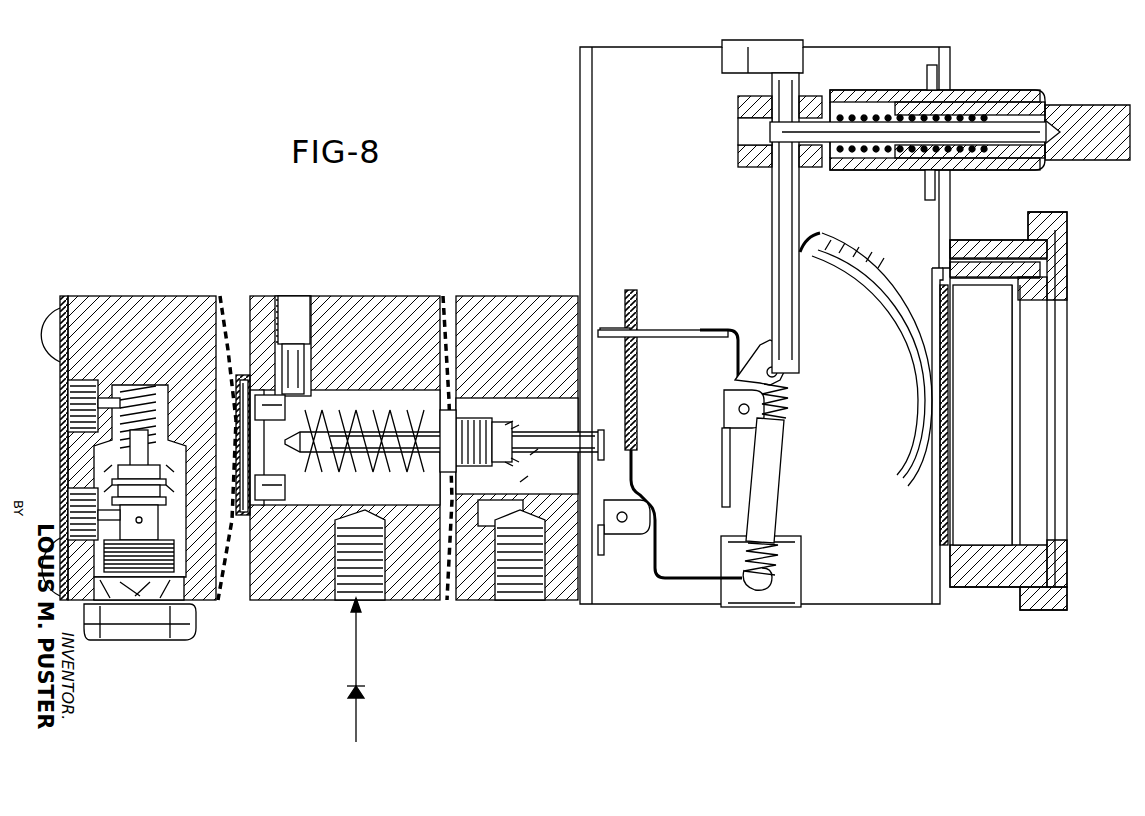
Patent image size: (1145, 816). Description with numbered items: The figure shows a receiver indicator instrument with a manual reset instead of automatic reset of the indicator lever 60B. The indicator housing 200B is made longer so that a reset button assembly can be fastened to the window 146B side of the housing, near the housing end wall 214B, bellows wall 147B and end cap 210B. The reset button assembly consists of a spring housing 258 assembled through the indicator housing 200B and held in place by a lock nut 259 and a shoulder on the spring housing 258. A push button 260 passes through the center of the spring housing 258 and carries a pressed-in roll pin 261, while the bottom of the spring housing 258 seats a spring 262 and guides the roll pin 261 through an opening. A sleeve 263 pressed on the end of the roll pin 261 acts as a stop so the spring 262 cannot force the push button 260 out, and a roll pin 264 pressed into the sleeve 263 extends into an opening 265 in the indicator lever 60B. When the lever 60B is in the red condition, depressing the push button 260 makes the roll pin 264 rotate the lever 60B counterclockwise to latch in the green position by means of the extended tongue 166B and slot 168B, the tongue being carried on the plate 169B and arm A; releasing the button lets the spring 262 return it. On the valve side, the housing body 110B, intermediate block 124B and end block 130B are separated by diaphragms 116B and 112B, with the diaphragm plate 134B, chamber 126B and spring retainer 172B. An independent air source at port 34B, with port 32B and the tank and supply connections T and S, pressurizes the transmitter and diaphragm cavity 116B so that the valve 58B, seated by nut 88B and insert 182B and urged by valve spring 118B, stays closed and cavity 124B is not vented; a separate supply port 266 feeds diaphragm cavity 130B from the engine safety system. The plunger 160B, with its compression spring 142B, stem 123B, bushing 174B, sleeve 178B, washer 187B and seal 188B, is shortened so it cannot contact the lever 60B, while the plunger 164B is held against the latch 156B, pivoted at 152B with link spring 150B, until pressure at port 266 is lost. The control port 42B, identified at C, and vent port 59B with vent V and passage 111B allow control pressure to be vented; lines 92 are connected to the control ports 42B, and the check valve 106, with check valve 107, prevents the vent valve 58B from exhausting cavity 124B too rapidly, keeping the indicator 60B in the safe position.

The housing body 110B is at (100, 312).
The diaphragm cavity 116B is at (210, 340).
The vent passage 111B is at (250, 290).
The vent V is at (280, 305).
The vent port 59B is at (305, 300).
The diaphragm 112B is at (475, 312).
The diaphragm cavity 124B is at (395, 355).
The stem 123B is at (294, 360).
The compression spring 142B is at (356, 426).
The valve spring 118B is at (130, 392).
The tank port T is at (68, 392).
The tank port fitting 32B is at (72, 410).
The check valve 106 is at (130, 468).
The port 34B is at (72, 500).
The supply port S is at (70, 520).
The valve 58B is at (176, 550).
The diaphragm plate 134B is at (280, 530).
The chamber 126B is at (228, 576).
The spring retainer 172B is at (318, 498).
The nut 88B is at (140, 580).
The valve seat insert 182B is at (152, 612).
The control port C is at (342, 600).
The control port 42B is at (356, 600).
The diaphragm cavity 130B is at (476, 532).
The supply port 266 is at (524, 600).
The seal 188B is at (526, 486).
The bushing 174B is at (482, 380).
The sleeve 178B is at (488, 400).
The washer 187B is at (478, 418).
The plunger 164B is at (498, 422).
The plunger 160B is at (605, 442).
The slot 168B is at (632, 360).
The plate 169B is at (626, 312).
The extended tongue 166B is at (658, 328).
The pivot arm A is at (710, 334).
The latch 156B is at (652, 555).
The link spring 150B is at (783, 465).
The pivot 152B is at (785, 365).
The indicator housing 200B is at (875, 538).
The indicator lever 60B is at (890, 322).
The opening 265 is at (798, 255).
The roll pin 264 is at (770, 196).
The sleeve 263 is at (738, 120).
The lock nut 259 is at (937, 75).
The spring 262 is at (1000, 100).
The push button 260 is at (1090, 116).
The spring housing 258 is at (986, 176).
The roll pin 261 is at (1040, 155).
The end wall 214B is at (1030, 280).
The window 146B is at (990, 380).
The bellows wall 147B is at (948, 445).
The end cap 210B is at (1035, 610).
The check valve 107 is at (366, 692).
The line 92 is at (354, 731).